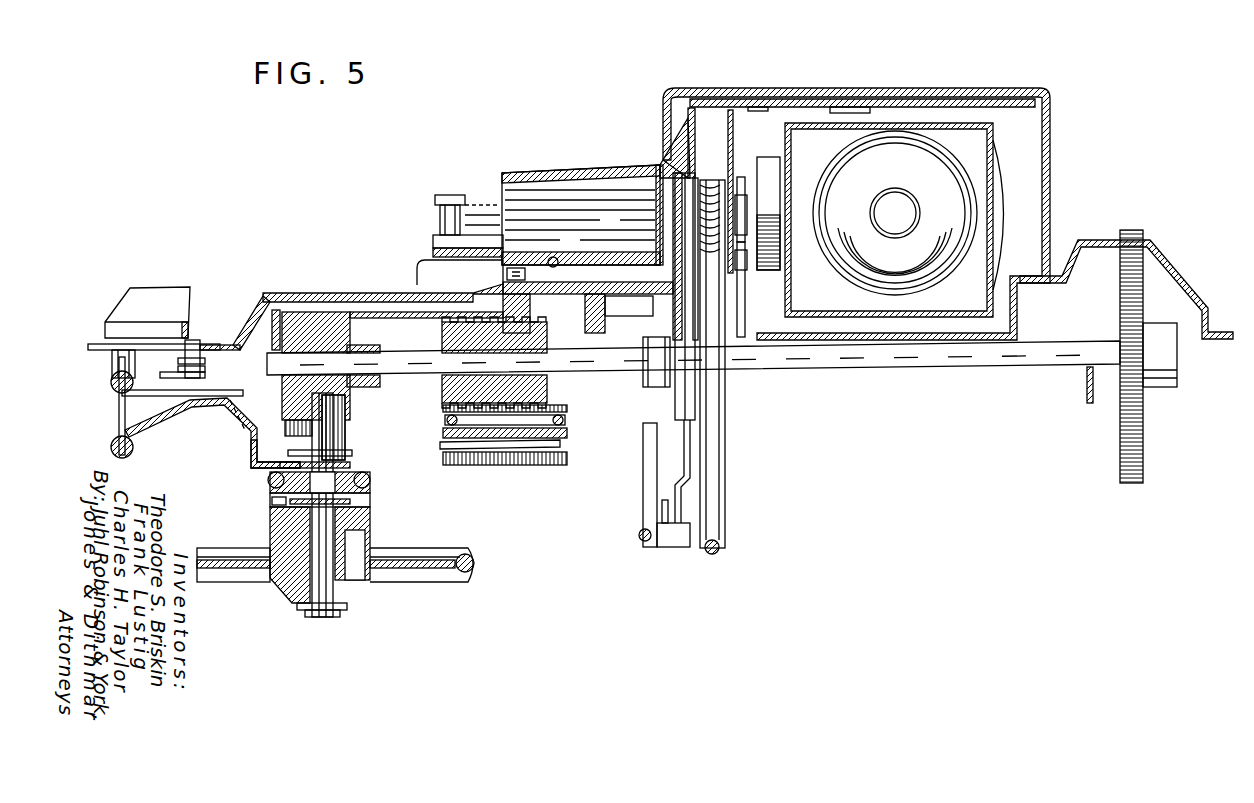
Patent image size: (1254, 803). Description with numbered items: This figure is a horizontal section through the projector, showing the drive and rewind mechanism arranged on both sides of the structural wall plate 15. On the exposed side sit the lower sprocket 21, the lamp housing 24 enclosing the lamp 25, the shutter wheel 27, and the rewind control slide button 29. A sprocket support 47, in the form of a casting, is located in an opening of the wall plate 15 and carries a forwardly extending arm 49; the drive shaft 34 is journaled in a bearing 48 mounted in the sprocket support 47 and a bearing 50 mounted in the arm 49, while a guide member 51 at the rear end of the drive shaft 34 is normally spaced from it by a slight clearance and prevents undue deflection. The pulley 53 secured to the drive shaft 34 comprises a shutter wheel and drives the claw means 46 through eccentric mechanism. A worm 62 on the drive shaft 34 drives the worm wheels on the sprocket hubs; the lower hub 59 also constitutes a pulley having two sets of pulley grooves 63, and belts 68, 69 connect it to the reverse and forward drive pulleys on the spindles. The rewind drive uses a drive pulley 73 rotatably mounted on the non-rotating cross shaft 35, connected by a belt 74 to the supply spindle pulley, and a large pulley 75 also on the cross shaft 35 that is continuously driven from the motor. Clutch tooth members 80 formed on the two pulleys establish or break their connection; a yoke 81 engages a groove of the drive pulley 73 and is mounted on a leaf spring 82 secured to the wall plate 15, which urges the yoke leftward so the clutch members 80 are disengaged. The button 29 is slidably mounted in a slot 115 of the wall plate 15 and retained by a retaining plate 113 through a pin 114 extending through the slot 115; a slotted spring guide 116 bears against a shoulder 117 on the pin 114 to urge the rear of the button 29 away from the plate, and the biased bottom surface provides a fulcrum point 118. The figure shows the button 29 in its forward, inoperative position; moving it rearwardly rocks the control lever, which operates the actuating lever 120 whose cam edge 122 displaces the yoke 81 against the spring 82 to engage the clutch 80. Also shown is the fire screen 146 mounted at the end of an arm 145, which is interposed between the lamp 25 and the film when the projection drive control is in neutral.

The wall plate 15 is at (275, 292).
The lower sprocket 21 is at (500, 192).
The lamp housing 24 is at (778, 88).
The lamp 25 is at (925, 170).
The shutter wheel 27 is at (1143, 437).
The rewind control slide button 29 is at (138, 325).
The drive shaft 34 is at (888, 362).
The cross shaft 35 is at (330, 618).
The claw means 46 is at (715, 440).
The sprocket support 47 is at (420, 265).
The bearing 48 is at (637, 337).
The forwardly extending arm 49 is at (350, 292).
The bearing 50 is at (282, 346).
The guide member 51 is at (1086, 398).
The pulley or shutter wheel 53 is at (728, 517).
The hub 59 is at (535, 467).
The worm 62 is at (442, 386).
The pulley grooves 63 is at (447, 432).
The belt 68 is at (560, 430).
The belt 69 is at (440, 456).
The drive pulley 73 is at (355, 476).
The belt 74 is at (370, 482).
The large pulley 75 is at (425, 570).
The clutch tooth members 80 is at (270, 510).
The yoke 81 is at (257, 460).
The leaf spring 82 is at (119, 400).
The retaining plate 113 is at (200, 340).
The pin 114 is at (112, 358).
The slot 115 is at (225, 345).
The slotted spring guide 116 is at (205, 362).
The shoulder 117 is at (205, 371).
The fulcrum point 118 is at (105, 343).
The actuating lever 120 is at (237, 415).
The cam edge 122 is at (243, 434).
The arm 145 is at (745, 297).
The fire screen 146 is at (742, 177).